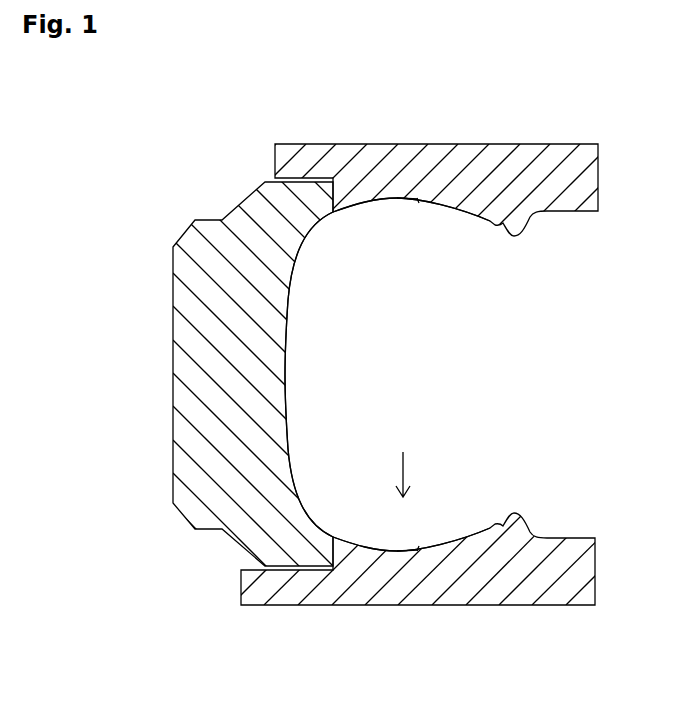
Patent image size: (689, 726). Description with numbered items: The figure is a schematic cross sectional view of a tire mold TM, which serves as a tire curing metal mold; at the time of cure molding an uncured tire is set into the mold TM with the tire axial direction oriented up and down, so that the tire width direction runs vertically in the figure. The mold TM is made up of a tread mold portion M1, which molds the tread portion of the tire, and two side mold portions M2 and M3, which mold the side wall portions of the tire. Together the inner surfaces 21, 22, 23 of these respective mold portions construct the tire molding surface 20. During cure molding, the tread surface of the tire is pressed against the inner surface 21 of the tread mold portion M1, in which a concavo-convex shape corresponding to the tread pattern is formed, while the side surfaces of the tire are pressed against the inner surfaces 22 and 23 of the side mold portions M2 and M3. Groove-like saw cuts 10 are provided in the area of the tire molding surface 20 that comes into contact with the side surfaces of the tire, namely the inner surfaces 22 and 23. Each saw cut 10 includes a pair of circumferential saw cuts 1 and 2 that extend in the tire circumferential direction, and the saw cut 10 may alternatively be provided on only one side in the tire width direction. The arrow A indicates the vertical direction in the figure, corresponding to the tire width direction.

The tire mold TM is at (182, 177).
The tread mold portion M1 is at (180, 320).
The side mold portion M2 is at (477, 143).
The side mold portion M3 is at (457, 607).
The circumferential saw cut 1 is at (360, 203).
The circumferential saw cut 2 is at (420, 202).
The saw cut 10 is at (408, 208).
The tire molding surface 20 is at (403, 305).
The inner surface 21 is at (285, 363).
The inner surface 22 is at (390, 202).
The inner surface 23 is at (385, 550).
The optical axis direction A is at (402, 459).